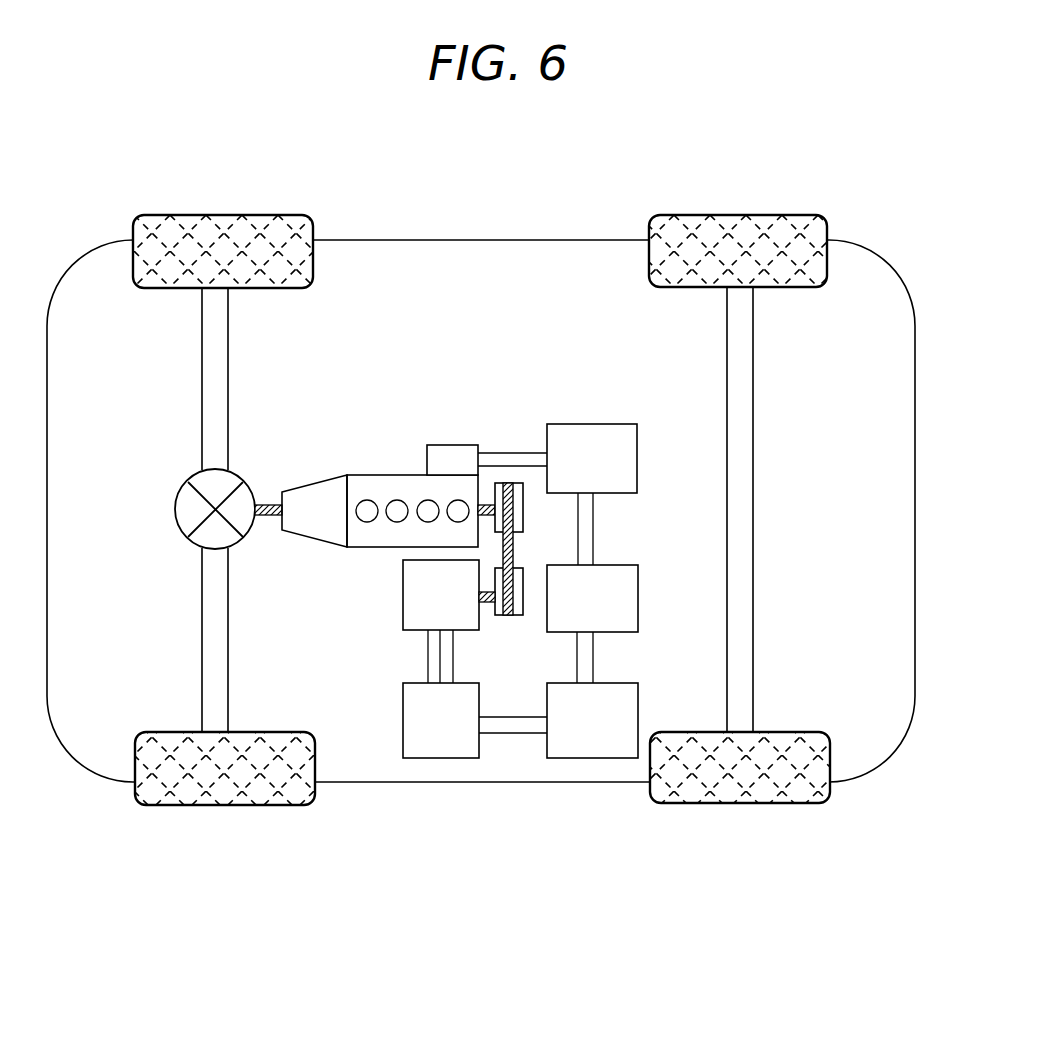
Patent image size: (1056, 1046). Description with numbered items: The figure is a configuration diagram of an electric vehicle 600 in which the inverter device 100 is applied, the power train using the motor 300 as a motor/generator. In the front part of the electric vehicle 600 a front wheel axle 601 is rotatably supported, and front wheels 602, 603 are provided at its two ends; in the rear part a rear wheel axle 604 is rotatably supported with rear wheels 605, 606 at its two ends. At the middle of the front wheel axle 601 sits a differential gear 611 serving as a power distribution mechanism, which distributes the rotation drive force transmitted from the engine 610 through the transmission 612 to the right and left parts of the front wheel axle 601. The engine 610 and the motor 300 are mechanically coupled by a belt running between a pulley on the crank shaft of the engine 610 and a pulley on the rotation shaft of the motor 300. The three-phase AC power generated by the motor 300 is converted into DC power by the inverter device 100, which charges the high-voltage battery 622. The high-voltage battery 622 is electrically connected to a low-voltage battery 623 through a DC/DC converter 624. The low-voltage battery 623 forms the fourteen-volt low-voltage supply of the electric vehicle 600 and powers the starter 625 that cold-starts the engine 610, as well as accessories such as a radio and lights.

The inverter device 100 is at (403, 708).
The motor 300 is at (403, 597).
The electric vehicle 600 is at (915, 398).
The front wheel axle 601 is at (202, 385).
The front wheel 602 is at (222, 216).
The front wheel 603 is at (226, 805).
The rear wheel axle 604 is at (753, 508).
The rear wheel 605 is at (738, 216).
The rear wheel 606 is at (745, 803).
The engine 610 is at (385, 475).
The differential gear 611 is at (175, 515).
The transmission 612 is at (300, 490).
The high-voltage battery 622 is at (593, 758).
The low-voltage battery 623 is at (590, 424).
The DC/DC converter 624 is at (638, 596).
The starter 625 is at (450, 445).